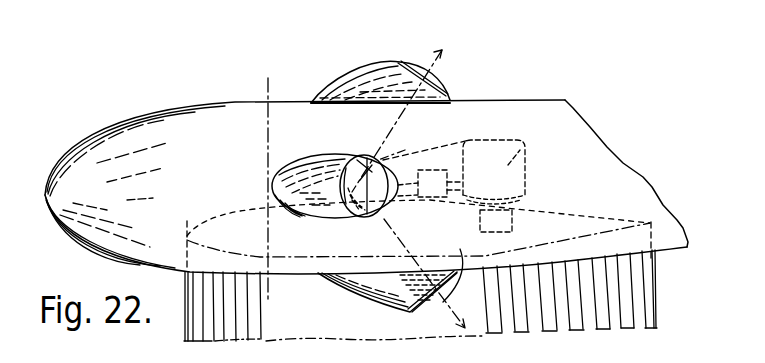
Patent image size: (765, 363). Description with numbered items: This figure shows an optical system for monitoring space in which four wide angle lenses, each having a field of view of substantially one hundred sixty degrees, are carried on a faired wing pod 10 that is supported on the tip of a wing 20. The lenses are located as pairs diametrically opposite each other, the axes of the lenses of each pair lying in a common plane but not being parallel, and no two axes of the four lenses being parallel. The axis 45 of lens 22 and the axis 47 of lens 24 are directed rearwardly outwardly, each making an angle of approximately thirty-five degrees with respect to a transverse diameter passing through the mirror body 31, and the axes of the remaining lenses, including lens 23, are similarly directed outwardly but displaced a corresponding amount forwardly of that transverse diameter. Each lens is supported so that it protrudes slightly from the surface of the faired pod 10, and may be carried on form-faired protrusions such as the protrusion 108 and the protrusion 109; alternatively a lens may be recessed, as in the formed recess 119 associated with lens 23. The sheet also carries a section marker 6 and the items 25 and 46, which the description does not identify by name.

The wing pod 10 is at (618, 168).
The wing 20 is at (640, 311).
The section line 6- 6 is at (270, 86).
The lens 22 is at (443, 85).
The lens 23 is at (347, 172).
The lens 24 is at (415, 312).
The actuator cylinder 25 is at (527, 143).
The mirror body 31 is at (405, 150).
The axis 45 is at (446, 48).
The pod lower portion 46 is at (333, 186).
The axis 47 is at (424, 273).
The form-faired protrusion 108 is at (374, 77).
The form-faired protrusion 109 is at (363, 288).
The formed recess 119 is at (283, 181).